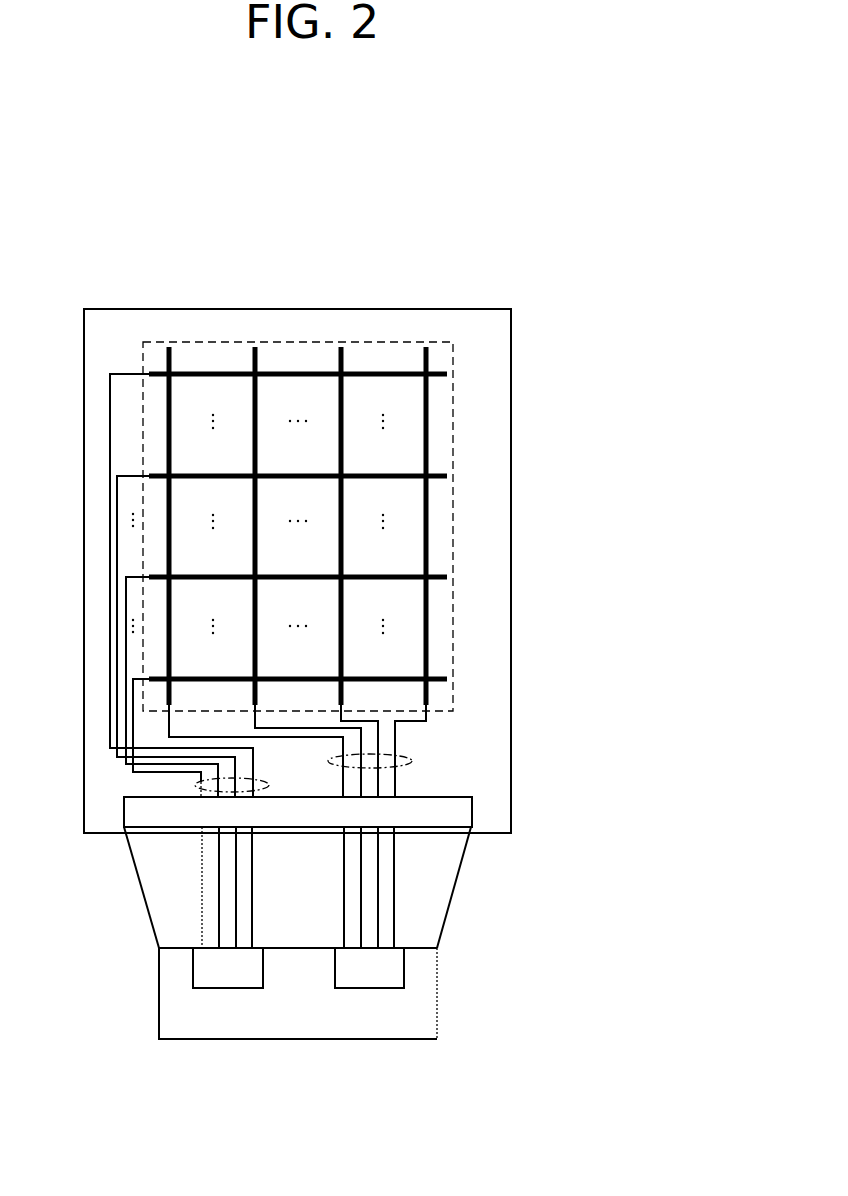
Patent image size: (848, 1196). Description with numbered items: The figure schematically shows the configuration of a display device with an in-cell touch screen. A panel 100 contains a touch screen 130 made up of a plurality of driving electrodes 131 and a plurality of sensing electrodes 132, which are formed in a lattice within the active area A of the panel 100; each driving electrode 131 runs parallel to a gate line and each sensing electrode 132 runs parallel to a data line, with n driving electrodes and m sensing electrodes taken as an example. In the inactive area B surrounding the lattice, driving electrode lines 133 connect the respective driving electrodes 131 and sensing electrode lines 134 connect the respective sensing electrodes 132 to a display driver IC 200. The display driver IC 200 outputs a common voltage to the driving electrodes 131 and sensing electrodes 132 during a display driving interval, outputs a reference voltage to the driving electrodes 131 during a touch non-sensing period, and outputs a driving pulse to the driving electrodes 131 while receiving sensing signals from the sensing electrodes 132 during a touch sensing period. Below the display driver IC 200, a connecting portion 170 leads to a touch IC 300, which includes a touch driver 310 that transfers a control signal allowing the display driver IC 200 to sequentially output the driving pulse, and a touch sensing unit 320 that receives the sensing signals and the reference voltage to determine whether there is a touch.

The panel 100 is at (243, 308).
The touch screen 130 is at (453, 418).
The driving electrode 131 is at (198, 575).
The sensing electrode 132 is at (428, 625).
The driving electrode line 133 is at (197, 788).
The sensing electrode line 134 is at (412, 757).
The display driver IC 200 is at (474, 808).
The flexible printed circuit 170 is at (460, 877).
The touch IC 300 is at (440, 997).
The touch driver 310 is at (211, 979).
The touch sensing unit 320 is at (352, 979).
The active area A is at (391, 395).
The inactive area B is at (492, 537).